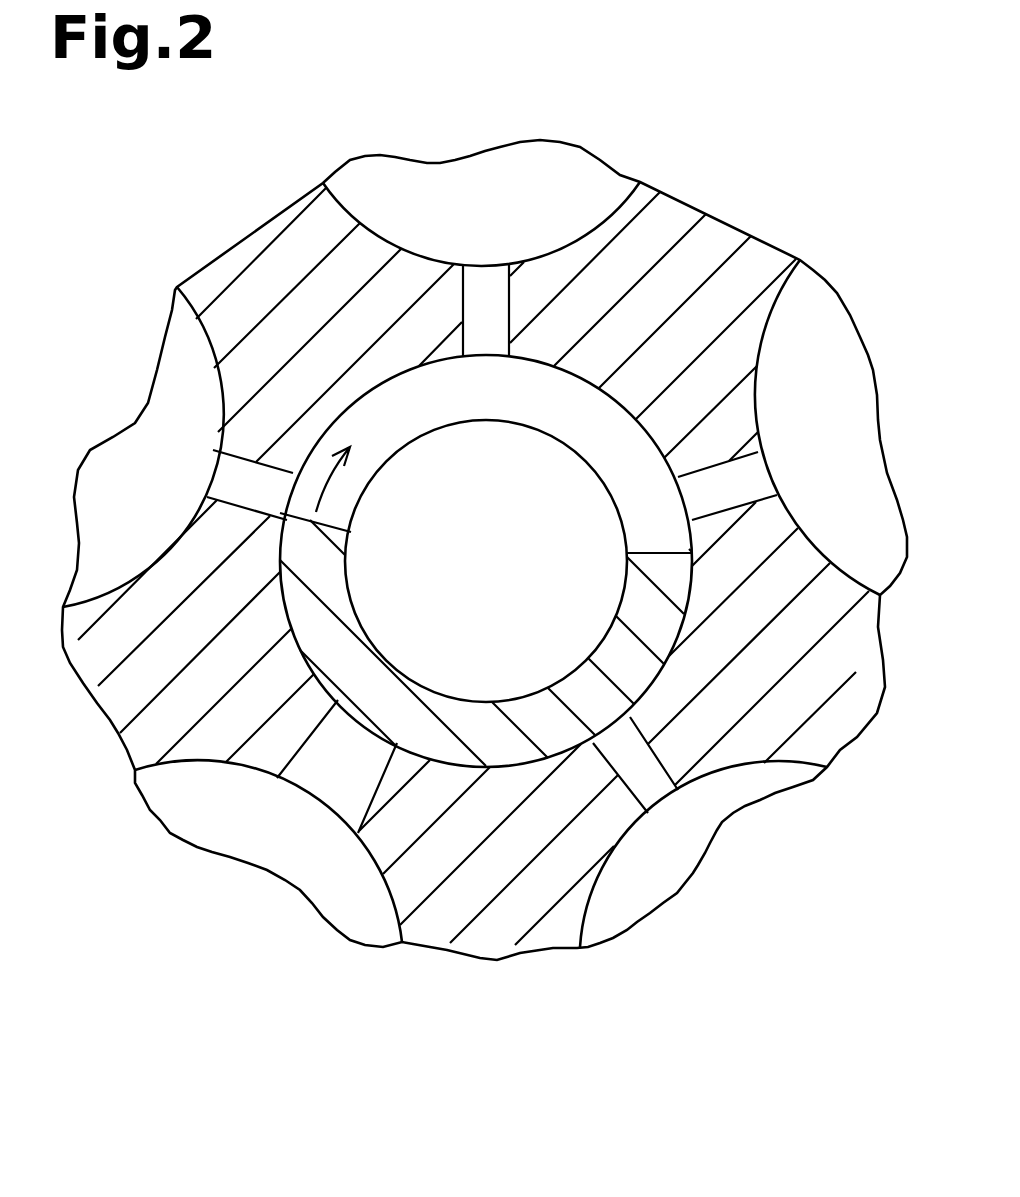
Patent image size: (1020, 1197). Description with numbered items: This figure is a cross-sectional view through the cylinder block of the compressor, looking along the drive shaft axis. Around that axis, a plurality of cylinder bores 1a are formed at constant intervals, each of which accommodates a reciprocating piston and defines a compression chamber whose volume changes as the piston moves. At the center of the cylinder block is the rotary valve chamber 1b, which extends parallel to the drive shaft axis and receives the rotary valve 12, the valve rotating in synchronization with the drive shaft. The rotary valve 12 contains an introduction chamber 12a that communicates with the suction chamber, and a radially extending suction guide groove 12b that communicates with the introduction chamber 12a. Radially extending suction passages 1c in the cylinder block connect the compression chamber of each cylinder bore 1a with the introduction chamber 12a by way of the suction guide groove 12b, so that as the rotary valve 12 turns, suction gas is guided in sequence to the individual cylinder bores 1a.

The cylinder bore 1a is at (623, 220).
The rotary valve chamber 1b is at (480, 766).
The suction passage 1c is at (465, 280).
The rotary valve 12 is at (370, 663).
The introduction chamber 12a is at (520, 572).
The suction guide groove 12b is at (520, 405).